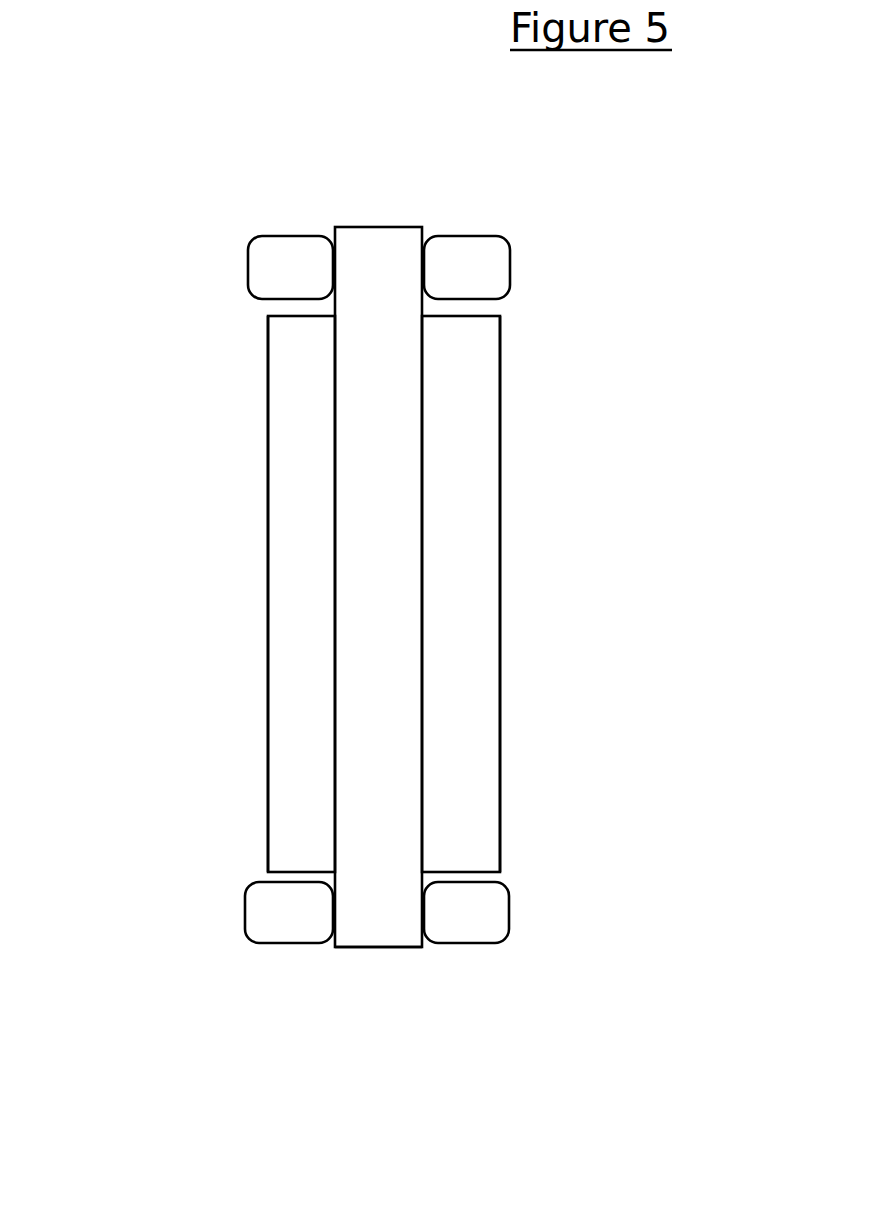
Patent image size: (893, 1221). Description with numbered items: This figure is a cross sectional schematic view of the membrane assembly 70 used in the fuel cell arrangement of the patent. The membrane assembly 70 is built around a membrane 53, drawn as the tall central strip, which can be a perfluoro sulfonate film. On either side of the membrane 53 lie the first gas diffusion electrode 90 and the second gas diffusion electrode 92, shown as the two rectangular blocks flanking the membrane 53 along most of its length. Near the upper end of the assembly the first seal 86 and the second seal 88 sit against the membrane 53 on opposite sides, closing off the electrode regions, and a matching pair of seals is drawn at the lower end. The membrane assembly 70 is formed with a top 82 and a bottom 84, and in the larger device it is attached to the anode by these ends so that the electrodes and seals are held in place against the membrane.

The membrane assembly 70 is at (375, 167).
The membrane 53 is at (373, 918).
The first seal 86 is at (492, 263).
The second seal 88 is at (260, 255).
The first gas diffusion electrode 90 is at (472, 408).
The second gas diffusion electrode 92 is at (312, 433).
The top 82 is at (265, 680).
The bottom 84 is at (500, 655).